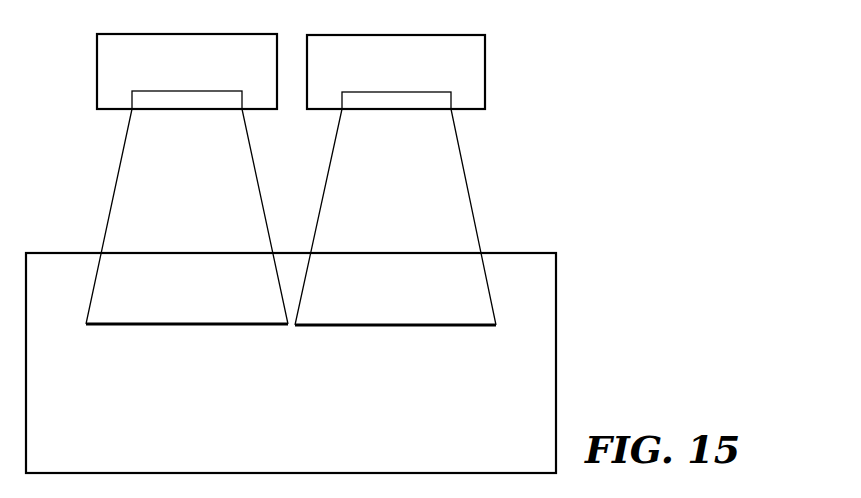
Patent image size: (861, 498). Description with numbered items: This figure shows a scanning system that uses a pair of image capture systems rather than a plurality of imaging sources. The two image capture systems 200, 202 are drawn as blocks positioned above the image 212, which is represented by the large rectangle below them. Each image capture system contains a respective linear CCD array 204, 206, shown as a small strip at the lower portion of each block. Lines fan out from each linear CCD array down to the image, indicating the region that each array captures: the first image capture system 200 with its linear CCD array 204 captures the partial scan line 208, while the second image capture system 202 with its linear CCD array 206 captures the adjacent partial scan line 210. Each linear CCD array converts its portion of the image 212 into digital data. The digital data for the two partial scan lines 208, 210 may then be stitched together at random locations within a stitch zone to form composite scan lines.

The image capture system 200 is at (110, 68).
The image capture system 202 is at (481, 67).
The linear CCD array 204 is at (190, 104).
The linear CCD array 206 is at (400, 104).
The partial scan line 208 is at (156, 330).
The partial scan line 210 is at (380, 330).
The image 212 is at (538, 321).